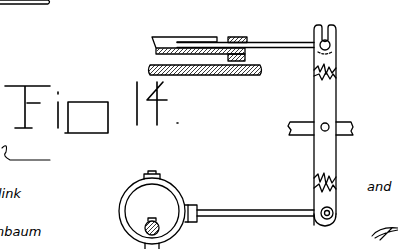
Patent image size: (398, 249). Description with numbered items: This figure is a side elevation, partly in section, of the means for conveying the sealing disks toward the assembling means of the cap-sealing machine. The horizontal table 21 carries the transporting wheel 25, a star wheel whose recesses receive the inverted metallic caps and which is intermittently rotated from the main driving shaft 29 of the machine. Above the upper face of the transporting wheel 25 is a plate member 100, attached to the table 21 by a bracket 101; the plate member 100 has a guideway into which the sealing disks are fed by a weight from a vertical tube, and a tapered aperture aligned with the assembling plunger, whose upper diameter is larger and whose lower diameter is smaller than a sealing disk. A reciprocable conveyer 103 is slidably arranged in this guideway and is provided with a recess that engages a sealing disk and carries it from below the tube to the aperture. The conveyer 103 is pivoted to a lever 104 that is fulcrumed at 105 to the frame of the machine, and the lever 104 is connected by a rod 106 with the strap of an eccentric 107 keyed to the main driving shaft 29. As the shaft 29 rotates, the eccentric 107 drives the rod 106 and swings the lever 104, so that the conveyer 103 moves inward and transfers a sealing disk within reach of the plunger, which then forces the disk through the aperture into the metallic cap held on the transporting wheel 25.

The horizontal table 21 is at (155, 63).
The transporting wheel 25 is at (32, 4).
The main driving shaft 29 is at (145, 229).
The plate member 100 is at (163, 44).
The bracket 101 is at (233, 37).
The reciprocable conveyer 103 is at (280, 43).
The lever 104 is at (327, 90).
The fulcrum 105 is at (322, 123).
The rod 106 is at (258, 212).
The eccentric 107 is at (158, 203).